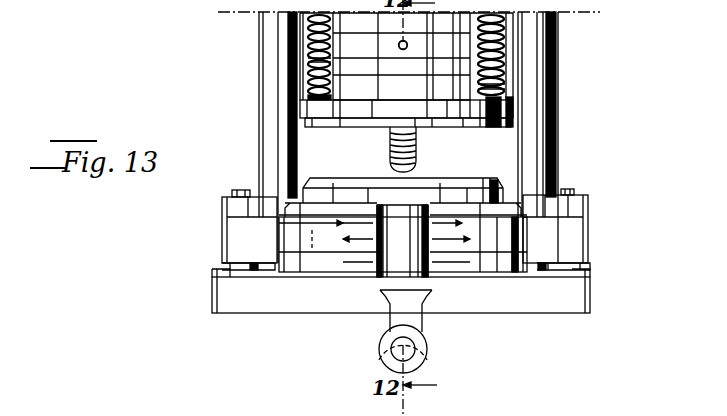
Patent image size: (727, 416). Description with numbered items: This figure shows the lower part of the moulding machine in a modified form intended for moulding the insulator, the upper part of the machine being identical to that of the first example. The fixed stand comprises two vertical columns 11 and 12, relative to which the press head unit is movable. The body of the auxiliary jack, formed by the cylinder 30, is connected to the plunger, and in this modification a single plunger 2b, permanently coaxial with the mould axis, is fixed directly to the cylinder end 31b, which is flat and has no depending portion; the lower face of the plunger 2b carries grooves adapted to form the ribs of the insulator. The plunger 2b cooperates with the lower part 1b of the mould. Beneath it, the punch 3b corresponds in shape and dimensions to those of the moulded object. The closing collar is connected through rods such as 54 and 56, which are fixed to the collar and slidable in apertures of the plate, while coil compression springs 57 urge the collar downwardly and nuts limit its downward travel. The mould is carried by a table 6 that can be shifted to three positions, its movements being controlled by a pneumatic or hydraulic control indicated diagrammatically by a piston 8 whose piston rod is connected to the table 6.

The vertical column 11 is at (261, 114).
The vertical column 12 is at (559, 116).
The cylinder 30 is at (363, 18).
The cylinder end 31b is at (420, 40).
The rod 56 is at (310, 50).
The rod 54 is at (500, 66).
The coil compression spring 57 is at (328, 59).
The plunger 2b is at (367, 84).
The punch 3b is at (418, 149).
The lower part of the mould 1b is at (468, 190).
The table 6 is at (320, 268).
The piston 8 is at (380, 349).